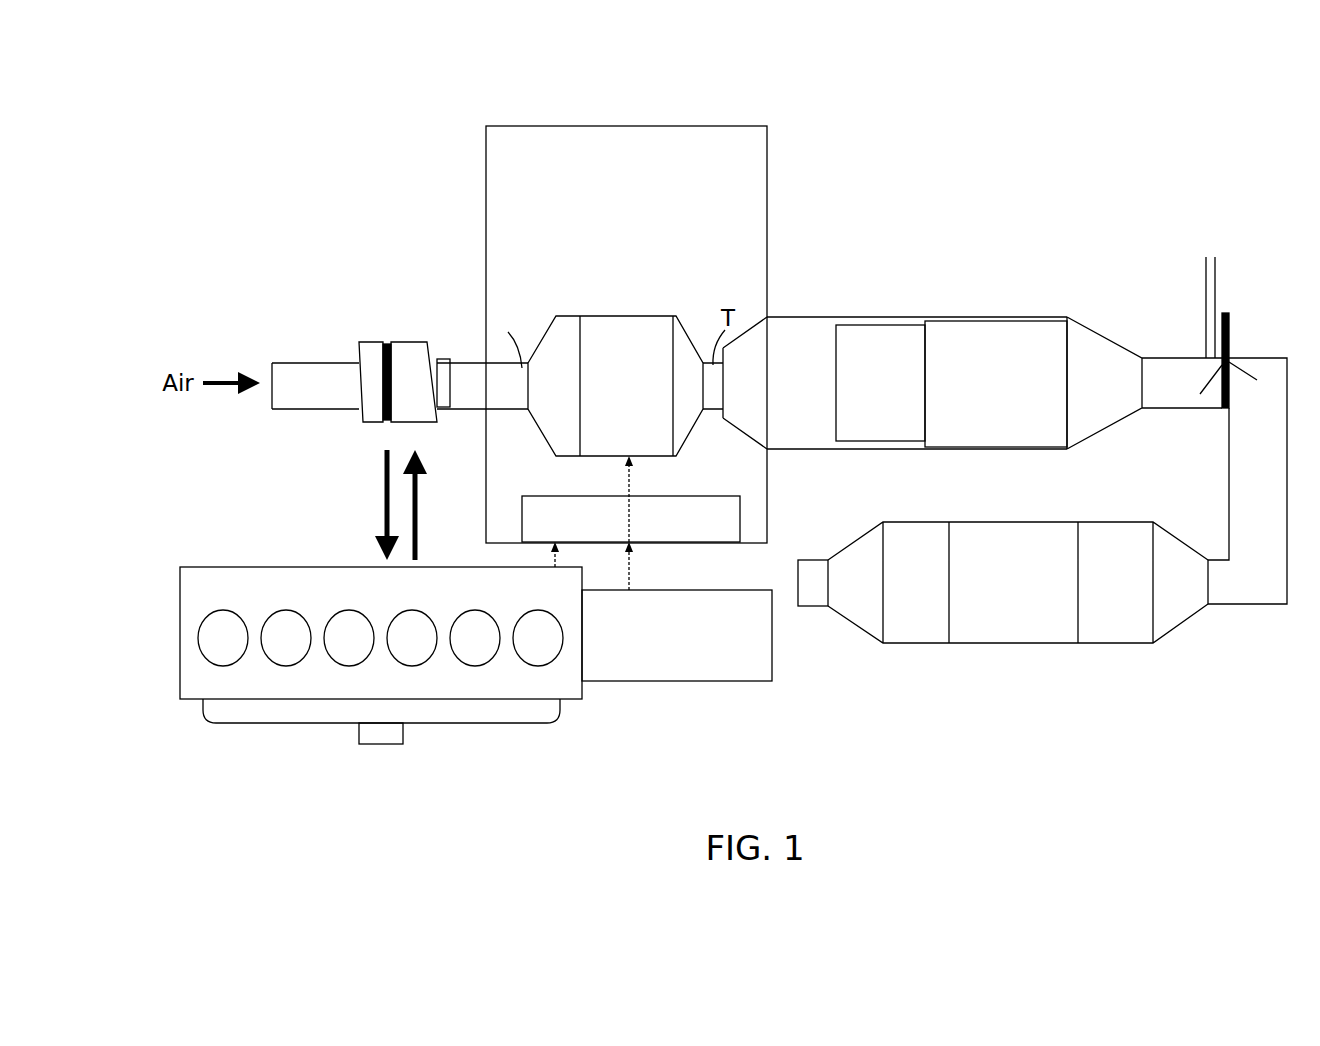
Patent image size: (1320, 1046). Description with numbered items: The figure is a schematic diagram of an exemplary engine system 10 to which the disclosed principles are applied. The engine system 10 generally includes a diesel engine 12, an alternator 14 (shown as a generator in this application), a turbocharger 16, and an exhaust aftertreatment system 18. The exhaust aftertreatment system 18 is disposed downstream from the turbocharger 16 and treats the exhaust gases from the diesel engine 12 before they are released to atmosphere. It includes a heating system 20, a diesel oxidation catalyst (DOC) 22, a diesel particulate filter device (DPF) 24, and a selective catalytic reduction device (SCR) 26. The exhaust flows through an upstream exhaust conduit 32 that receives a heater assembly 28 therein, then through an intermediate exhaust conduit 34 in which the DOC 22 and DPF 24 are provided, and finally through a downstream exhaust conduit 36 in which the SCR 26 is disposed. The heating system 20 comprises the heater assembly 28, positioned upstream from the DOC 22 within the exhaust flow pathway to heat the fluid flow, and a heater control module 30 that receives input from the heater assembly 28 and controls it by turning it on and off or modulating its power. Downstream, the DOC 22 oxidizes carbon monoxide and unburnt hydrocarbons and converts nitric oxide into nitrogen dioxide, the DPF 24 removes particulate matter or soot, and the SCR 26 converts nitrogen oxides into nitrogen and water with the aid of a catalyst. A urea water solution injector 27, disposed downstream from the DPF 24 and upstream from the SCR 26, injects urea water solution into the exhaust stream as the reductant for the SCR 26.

The engine system 10 is at (1160, 98).
The diesel engine 12 is at (180, 610).
The alternator 14 is at (722, 681).
The turbocharger 16 is at (377, 342).
The exhaust aftertreatment system 18 is at (992, 176).
The heating system 20 is at (633, 126).
The diesel oxidation catalyst (DOC) 22 is at (860, 328).
The diesel particulate filter device (DPF) 24 is at (997, 322).
The selective catalytic reduction device (SCR) 26 is at (1010, 643).
The urea water solution injector 27 is at (1218, 292).
The heater assembly 28 is at (670, 320).
The heater control module 30 is at (740, 530).
The upstream exhaust conduit 32 is at (546, 322).
The intermediate exhaust conduit 34 is at (783, 316).
The downstream exhaust conduit 36 is at (1110, 642).